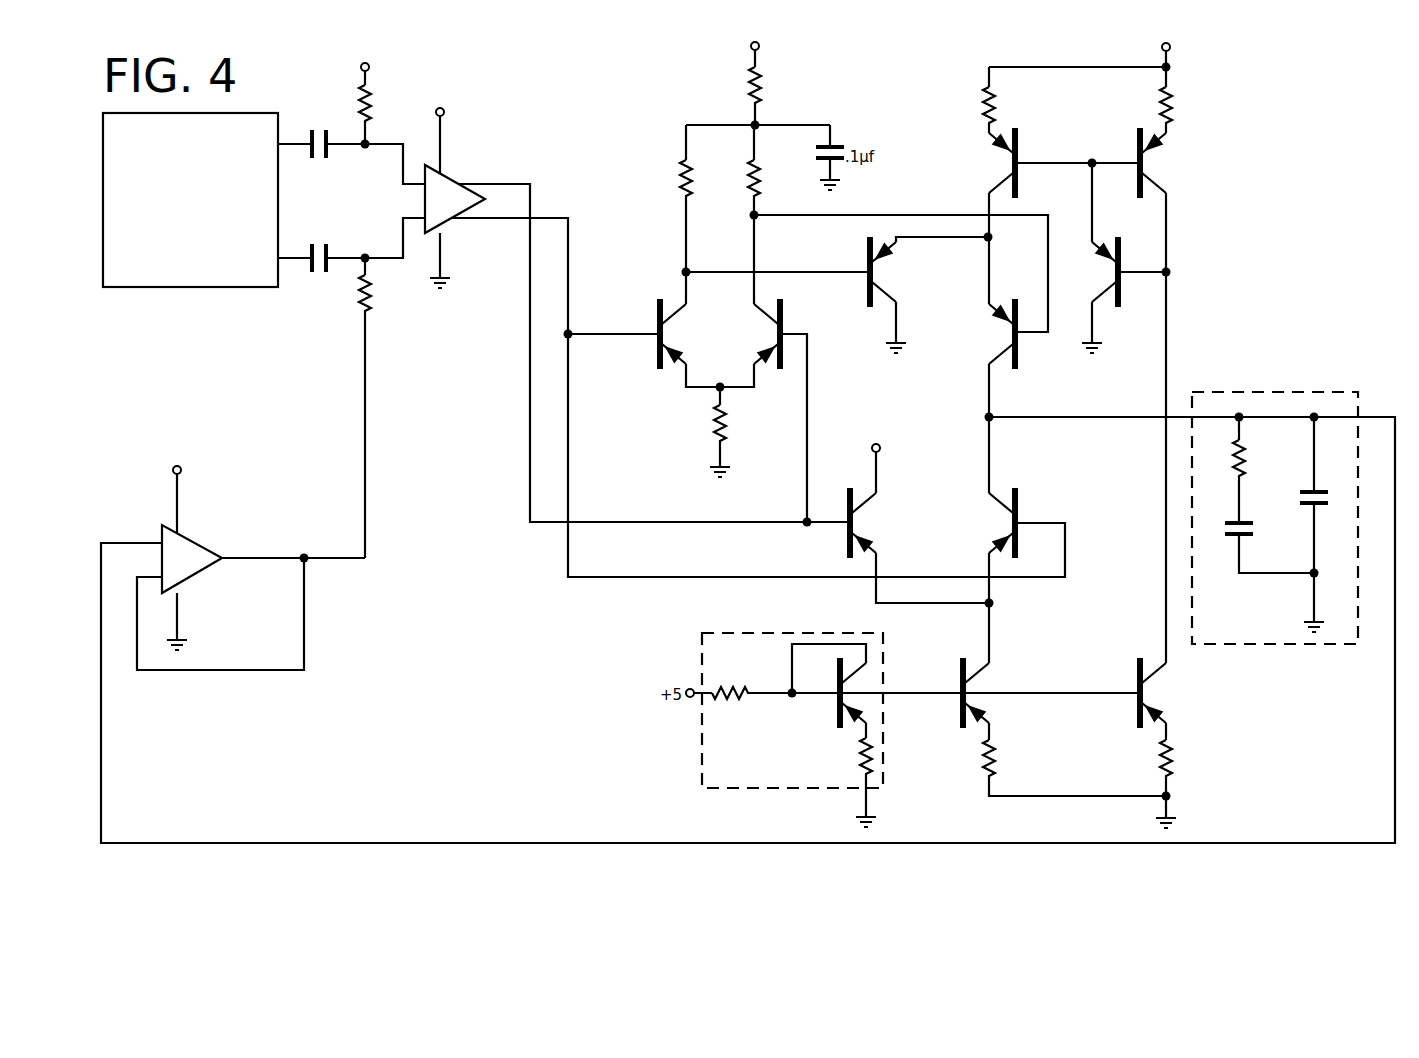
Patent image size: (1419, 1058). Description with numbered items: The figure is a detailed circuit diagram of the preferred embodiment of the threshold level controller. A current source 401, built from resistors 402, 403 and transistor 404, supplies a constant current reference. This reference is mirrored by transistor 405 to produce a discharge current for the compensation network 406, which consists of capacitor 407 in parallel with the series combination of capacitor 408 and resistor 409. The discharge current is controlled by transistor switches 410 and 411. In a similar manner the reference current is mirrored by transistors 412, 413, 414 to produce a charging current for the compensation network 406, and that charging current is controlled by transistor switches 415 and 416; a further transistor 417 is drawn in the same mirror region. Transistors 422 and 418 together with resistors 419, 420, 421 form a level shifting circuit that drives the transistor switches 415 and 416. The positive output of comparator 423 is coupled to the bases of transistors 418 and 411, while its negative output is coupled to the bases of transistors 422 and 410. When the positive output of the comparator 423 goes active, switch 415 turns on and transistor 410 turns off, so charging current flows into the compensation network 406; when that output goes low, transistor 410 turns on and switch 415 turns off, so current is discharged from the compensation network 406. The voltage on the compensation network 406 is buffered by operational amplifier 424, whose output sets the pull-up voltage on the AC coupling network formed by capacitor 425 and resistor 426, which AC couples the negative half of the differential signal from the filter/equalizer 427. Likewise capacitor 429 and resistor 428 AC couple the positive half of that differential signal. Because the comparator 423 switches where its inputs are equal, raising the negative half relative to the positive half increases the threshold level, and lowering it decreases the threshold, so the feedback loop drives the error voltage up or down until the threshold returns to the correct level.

The current source 401 is at (730, 630).
The resistor 402 is at (735, 685).
The resistor 403 is at (875, 755).
The transistor 404 is at (835, 717).
The transistor 405 is at (957, 673).
The compensation network 406 is at (1275, 390).
The capacitor 407 is at (1312, 490).
The capacitor 408 is at (1240, 520).
The resistor 409 is at (1245, 460).
The transistor switch 410 is at (1017, 503).
The transistor switch 411 is at (845, 502).
The transistor 412 is at (1135, 673).
The transistor 413 is at (1137, 150).
The transistor 414 is at (1018, 150).
The transistor switch 415 is at (1023, 363).
The transistor switch 416 is at (865, 257).
The transistor 417 is at (1123, 253).
The transistor 418 is at (783, 315).
The resistor 419 is at (762, 85).
The resistor 420 is at (748, 182).
The resistor 421 is at (680, 182).
The transistor 422 is at (652, 312).
The comparator 423 is at (452, 178).
The operational amplifier 424 is at (195, 542).
The capacitor 425 is at (332, 240).
The resistor 426 is at (372, 315).
The filter/equalizer 427 is at (192, 288).
The resistor 428 is at (357, 110).
The capacitor 429 is at (332, 162).